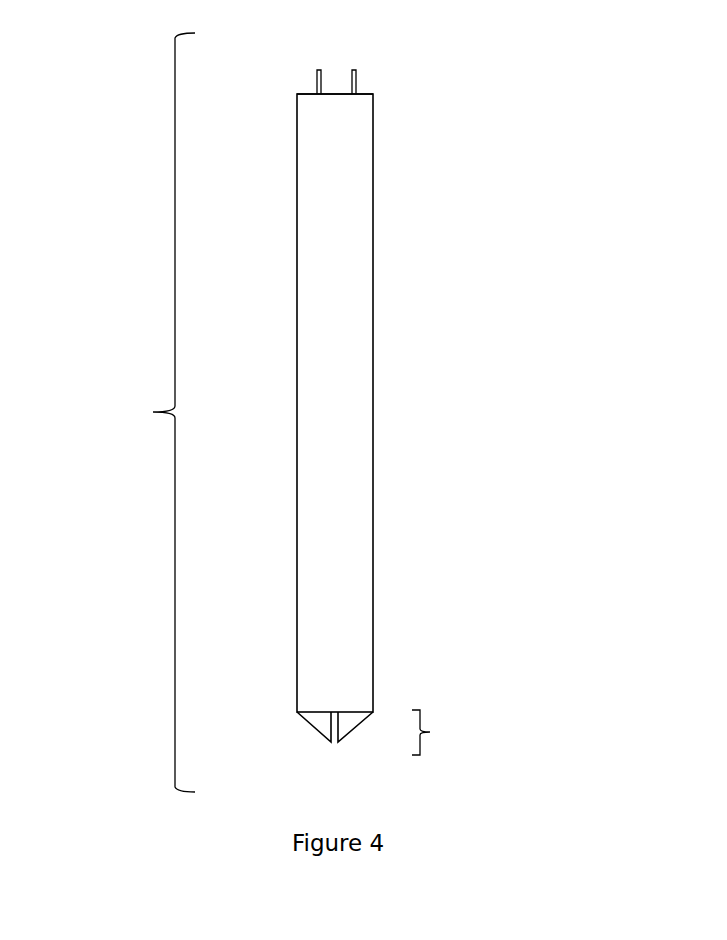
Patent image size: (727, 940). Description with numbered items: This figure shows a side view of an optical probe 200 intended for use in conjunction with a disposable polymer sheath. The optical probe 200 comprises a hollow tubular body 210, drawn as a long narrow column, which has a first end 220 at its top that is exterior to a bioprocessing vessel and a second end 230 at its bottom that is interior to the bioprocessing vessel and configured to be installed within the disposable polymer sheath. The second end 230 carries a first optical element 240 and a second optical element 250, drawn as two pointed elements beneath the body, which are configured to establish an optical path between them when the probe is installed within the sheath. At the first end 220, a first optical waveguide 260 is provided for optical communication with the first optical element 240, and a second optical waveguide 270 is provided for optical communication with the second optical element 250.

The optical probe 200 is at (137, 413).
The hollow tubular body 210 is at (374, 358).
The first end 220 is at (373, 98).
The second end 230 is at (450, 733).
The first optical element 240 is at (308, 725).
The second optical element 250 is at (352, 732).
The first optical waveguide 260 is at (317, 77).
The second optical waveguide 270 is at (356, 77).